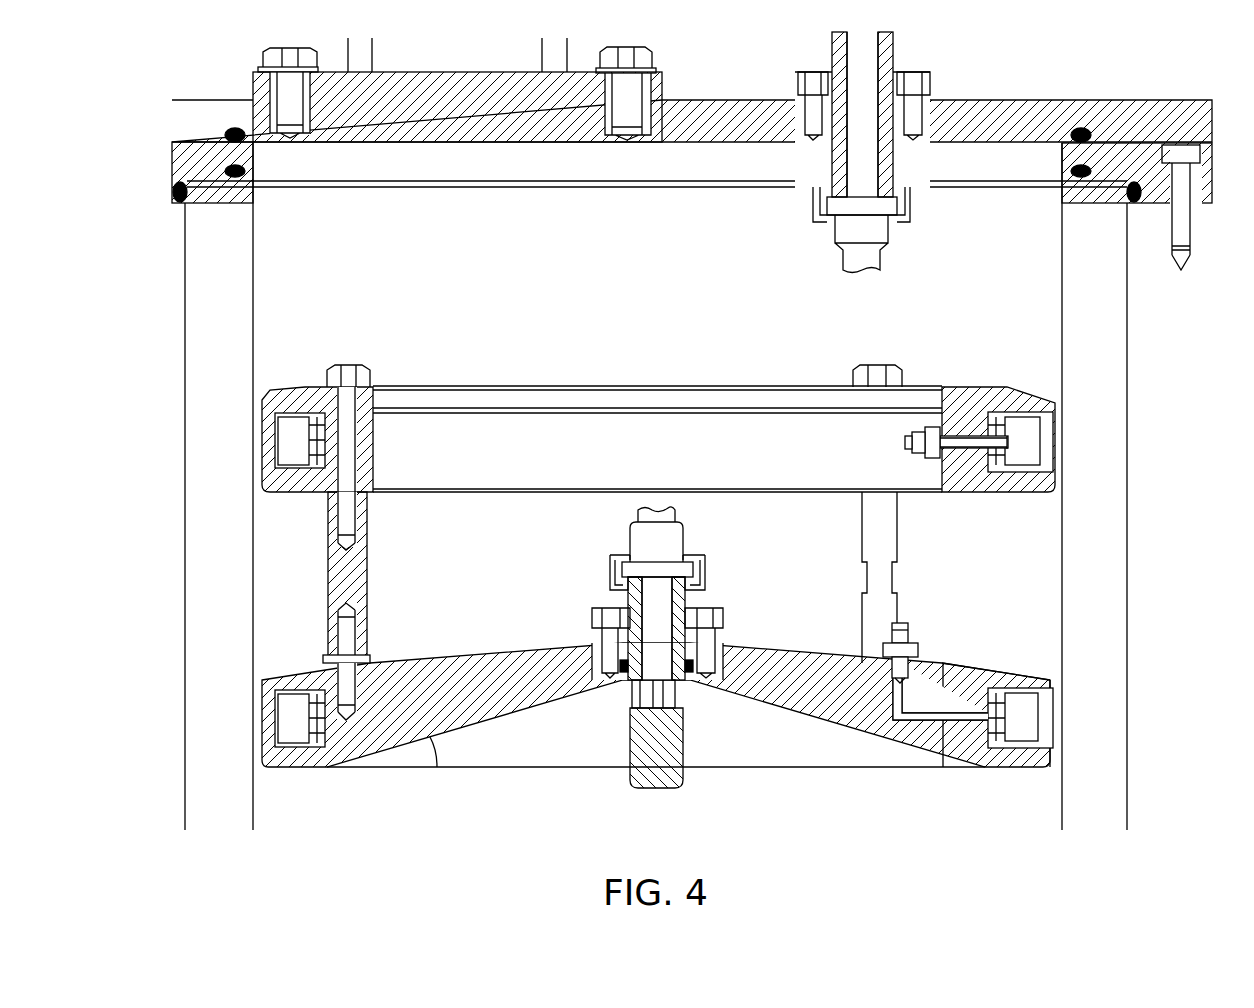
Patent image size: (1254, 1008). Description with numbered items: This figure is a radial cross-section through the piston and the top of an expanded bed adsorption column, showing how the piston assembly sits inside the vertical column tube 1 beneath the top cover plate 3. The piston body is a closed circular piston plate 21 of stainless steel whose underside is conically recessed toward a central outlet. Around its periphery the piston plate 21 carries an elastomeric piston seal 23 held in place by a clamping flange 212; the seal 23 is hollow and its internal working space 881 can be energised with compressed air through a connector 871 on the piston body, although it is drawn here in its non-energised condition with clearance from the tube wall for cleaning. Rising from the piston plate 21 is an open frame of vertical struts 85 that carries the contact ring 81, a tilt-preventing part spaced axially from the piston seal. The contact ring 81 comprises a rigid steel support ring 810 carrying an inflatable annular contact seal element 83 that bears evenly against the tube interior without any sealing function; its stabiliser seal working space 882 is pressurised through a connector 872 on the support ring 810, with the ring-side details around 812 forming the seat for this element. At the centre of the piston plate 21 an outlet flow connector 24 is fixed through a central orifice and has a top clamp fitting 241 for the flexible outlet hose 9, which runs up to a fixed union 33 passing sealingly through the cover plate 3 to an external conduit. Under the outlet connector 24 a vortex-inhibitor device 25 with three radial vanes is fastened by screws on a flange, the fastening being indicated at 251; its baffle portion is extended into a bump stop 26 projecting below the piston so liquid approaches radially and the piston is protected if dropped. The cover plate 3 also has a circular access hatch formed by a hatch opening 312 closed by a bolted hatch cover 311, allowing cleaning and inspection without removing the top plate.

The column tube 1 is at (1130, 446).
The top cover plate 3 is at (1008, 103).
The hatch cover 311 is at (512, 78).
The hatch opening 312 is at (582, 135).
The fixed connector or union 33 is at (893, 62).
The flexible outlet hose 9 is at (887, 248).
The contact ring 81 is at (666, 418).
The support ring 810 is at (602, 432).
The contact seal element 83 is at (266, 440).
The right end block 812 is at (1077, 407).
The stabiliser seal working space 882 is at (1027, 440).
The connector 872 is at (928, 436).
The vertical struts 85 is at (898, 548).
The piston plate 21 is at (738, 712).
The clamping flange 212 is at (1023, 665).
The piston seal 23 is at (1078, 747).
The working space 881 is at (1022, 735).
The connector 871 is at (910, 638).
The outlet flow connector 24 is at (687, 603).
The top clamp fitting 241 is at (622, 578).
The vortex-inhibitor device 25 is at (662, 715).
The nut 251 is at (675, 690).
The bump stop 26 is at (660, 790).